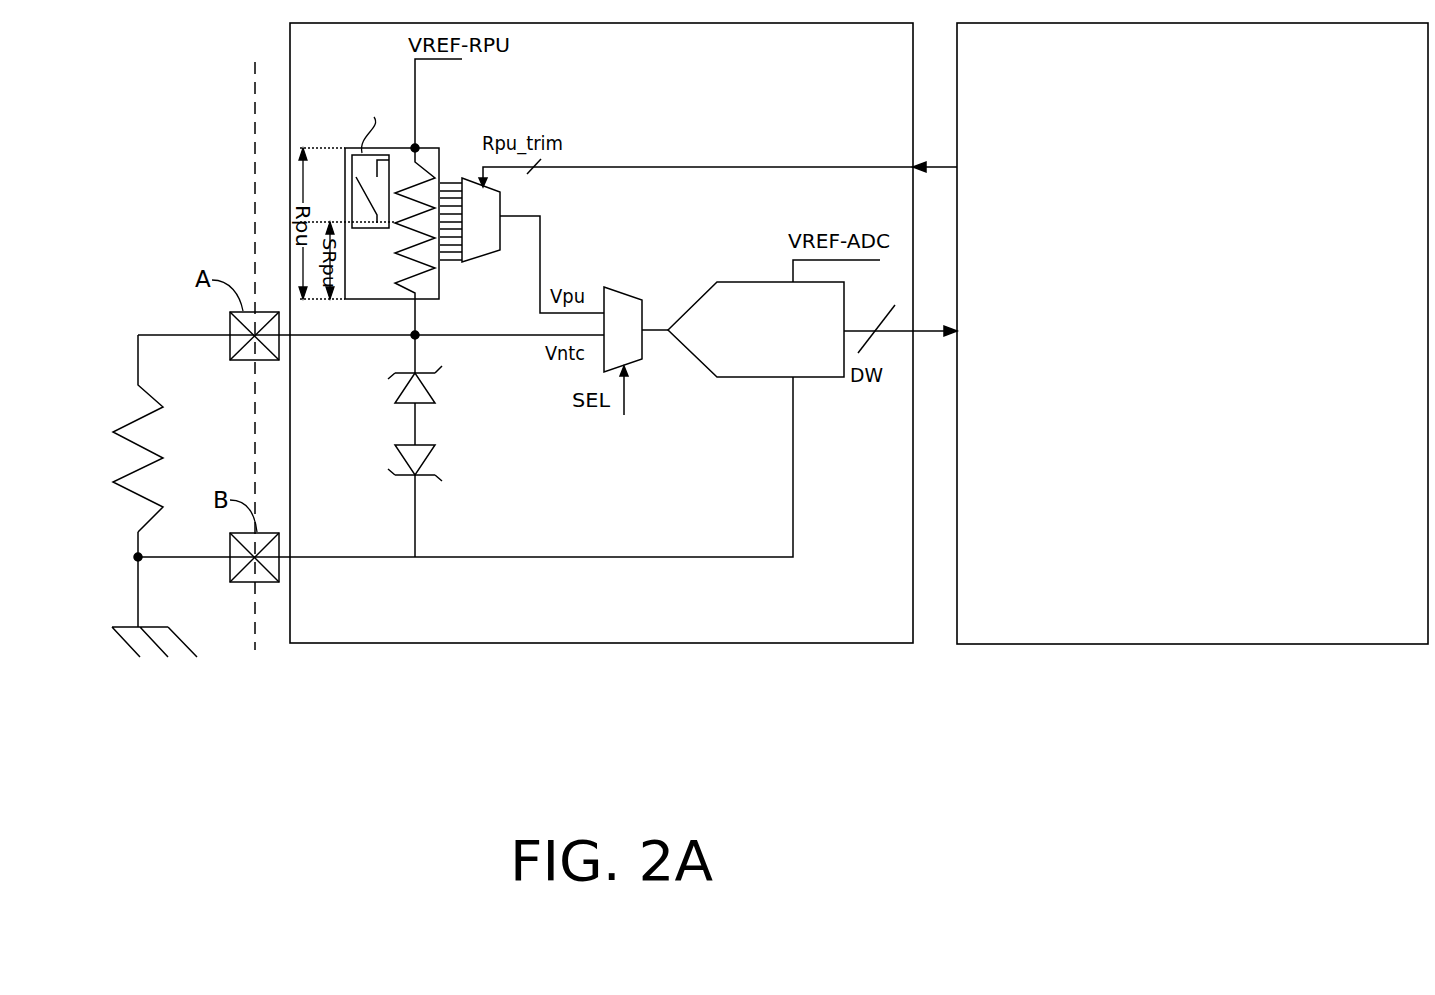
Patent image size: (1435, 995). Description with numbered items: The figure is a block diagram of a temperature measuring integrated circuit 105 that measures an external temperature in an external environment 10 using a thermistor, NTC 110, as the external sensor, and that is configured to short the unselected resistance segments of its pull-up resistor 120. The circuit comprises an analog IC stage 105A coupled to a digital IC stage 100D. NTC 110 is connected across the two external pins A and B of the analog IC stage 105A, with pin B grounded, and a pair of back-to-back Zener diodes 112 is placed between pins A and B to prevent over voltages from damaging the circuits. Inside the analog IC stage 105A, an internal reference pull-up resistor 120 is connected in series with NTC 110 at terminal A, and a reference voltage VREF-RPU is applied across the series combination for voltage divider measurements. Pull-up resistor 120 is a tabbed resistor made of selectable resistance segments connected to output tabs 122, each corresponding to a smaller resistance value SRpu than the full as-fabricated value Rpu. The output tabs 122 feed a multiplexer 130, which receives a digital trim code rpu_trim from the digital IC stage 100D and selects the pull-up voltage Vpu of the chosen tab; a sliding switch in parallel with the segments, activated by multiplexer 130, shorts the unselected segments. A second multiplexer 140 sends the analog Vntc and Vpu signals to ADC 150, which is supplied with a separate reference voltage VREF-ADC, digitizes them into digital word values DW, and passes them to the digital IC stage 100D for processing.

The external environment 10 is at (175, 183).
The temperature measuring integrated circuit 105 is at (630, 802).
The analog IC stage 105A is at (613, 643).
The digital IC stage 100D is at (1122, 644).
The NTC 110 is at (130, 427).
The diodes 112 is at (416, 430).
The pull-up resistor 120 is at (348, 148).
The output tabs 122 is at (452, 263).
The multiplexer 130 is at (497, 253).
The multiplexer 140 is at (611, 288).
The ADC 150 is at (757, 282).